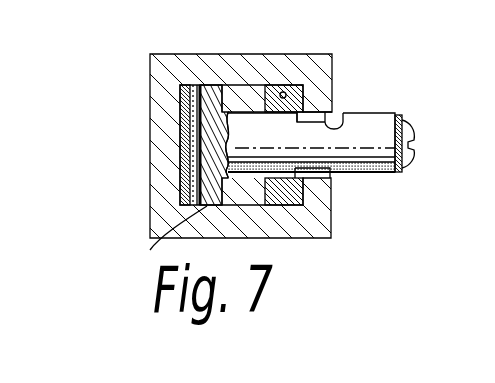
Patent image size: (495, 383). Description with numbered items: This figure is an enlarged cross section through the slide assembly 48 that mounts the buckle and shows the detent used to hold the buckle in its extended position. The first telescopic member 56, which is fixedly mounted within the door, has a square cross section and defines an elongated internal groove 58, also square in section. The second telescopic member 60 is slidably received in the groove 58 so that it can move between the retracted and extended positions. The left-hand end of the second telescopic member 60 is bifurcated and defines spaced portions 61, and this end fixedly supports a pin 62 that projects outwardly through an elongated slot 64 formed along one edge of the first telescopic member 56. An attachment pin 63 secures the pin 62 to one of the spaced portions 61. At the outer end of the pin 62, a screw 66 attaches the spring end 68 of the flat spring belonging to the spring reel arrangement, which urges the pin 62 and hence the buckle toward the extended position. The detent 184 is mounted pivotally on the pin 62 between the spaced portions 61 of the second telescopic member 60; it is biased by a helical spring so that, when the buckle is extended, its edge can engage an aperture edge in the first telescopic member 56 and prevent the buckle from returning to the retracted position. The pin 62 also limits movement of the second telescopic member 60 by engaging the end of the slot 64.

The slide assembly 48 is at (247, 148).
The first telescopic member 56 is at (155, 93).
The internal groove 58 is at (283, 92).
The second telescopic member 60 is at (290, 99).
The spaced portions 61 is at (165, 239).
The pin 62 is at (383, 127).
The attachment pin 63 is at (192, 90).
The elongated slot 64 is at (338, 125).
The screw 66 is at (405, 165).
The spring end 68 is at (403, 124).
The detent 184 is at (256, 198).